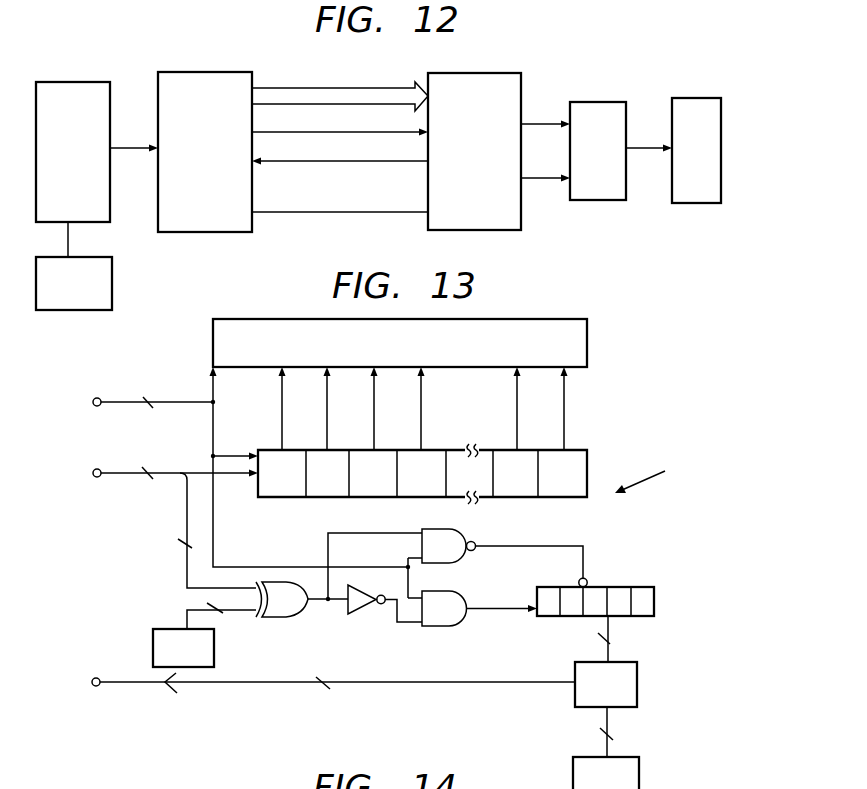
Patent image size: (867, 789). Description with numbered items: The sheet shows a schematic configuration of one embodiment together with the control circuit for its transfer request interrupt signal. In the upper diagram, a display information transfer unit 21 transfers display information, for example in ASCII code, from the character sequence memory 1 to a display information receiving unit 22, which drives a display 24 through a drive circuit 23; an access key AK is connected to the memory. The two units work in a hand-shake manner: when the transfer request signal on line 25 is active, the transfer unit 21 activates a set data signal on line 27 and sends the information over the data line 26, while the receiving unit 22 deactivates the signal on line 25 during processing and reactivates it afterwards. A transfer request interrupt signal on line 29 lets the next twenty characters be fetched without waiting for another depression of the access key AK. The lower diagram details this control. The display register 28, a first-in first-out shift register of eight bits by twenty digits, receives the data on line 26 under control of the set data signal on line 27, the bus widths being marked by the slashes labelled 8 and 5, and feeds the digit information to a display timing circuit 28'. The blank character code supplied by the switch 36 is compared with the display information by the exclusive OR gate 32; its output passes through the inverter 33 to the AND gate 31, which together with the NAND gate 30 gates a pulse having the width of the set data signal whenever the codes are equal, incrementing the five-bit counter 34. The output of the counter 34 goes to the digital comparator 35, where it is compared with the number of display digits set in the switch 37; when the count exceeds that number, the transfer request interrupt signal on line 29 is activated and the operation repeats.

In FIG. 12, the character sequence memory 1 is at (112, 92).
In FIG. 13, the character sequence memory 1 is at (236, 532).
In FIG. 12, the access key AK is at (112, 287).
In FIG. 12, the display information transfer unit 21 is at (254, 80).
In FIG. 12, the display information receiving unit 22 is at (523, 78).
In FIG. 13, the display information receiving unit 22 is at (654, 477).
In FIG. 12, the drive circuit 23 is at (600, 102).
In FIG. 12, the display 24 is at (700, 98).
In FIG. 12, the line 25 is at (320, 161).
In FIG. 12, the data line 26 is at (340, 87).
In FIG. 13, the data line 26 is at (116, 471).
In FIG. 12, the line 27 is at (320, 131).
In FIG. 13, the line 27 is at (116, 400).
In FIG. 12, the line 29 is at (321, 212).
In FIG. 13, the line 29 is at (118, 680).
In FIG. 13, the display register 28 is at (445, 474).
In FIG. 13, the display timing circuit 28' is at (425, 342).
In FIG. 13, the NAND gate 30 is at (457, 528).
In FIG. 13, the AND gate 31 is at (456, 595).
In FIG. 13, the exclusive OR gate 32 is at (290, 618).
In FIG. 13, the inverter 33 is at (366, 618).
In FIG. 13, the 5-bit counter 34 is at (640, 586).
In FIG. 13, the digital comparator 35 is at (639, 679).
In FIG. 13, the read-only memory 36 is at (157, 628).
In FIG. 13, the read-only memory 37 is at (640, 772).
In FIG. 13, the 8-bit bus 8 is at (199, 540).
In FIG. 13, the 5-bit bus 5 is at (613, 686).